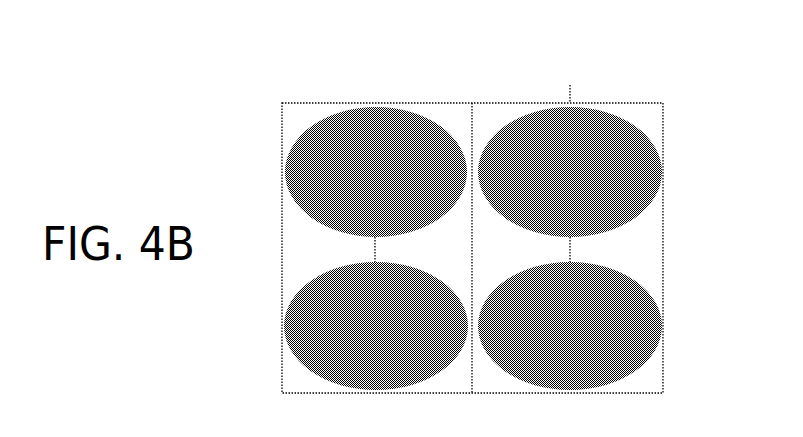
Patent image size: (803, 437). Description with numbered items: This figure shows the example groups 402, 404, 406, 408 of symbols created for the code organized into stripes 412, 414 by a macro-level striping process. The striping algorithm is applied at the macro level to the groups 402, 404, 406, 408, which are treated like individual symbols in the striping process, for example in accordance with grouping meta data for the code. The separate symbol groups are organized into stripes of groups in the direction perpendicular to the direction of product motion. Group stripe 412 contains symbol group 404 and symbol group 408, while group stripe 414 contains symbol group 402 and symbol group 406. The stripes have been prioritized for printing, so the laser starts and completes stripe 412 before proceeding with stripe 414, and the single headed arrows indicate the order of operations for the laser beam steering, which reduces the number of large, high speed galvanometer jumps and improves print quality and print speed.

The group 402 is at (288, 149).
The group 404 is at (652, 142).
The group 406 is at (294, 353).
The group 408 is at (653, 352).
The stripe 412 is at (583, 68).
The stripe 414 is at (358, 78).